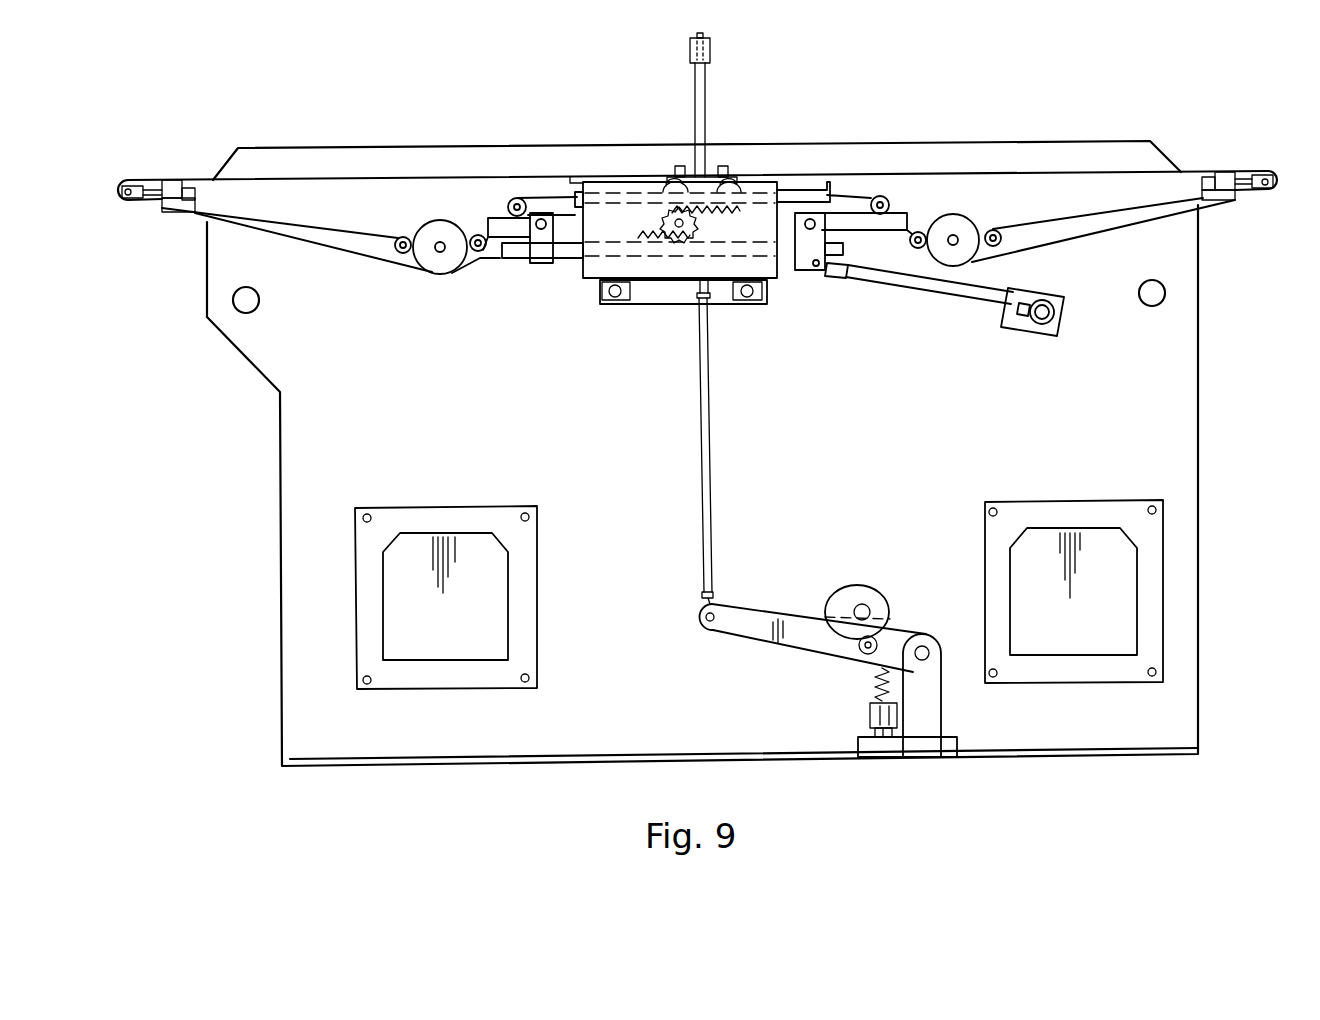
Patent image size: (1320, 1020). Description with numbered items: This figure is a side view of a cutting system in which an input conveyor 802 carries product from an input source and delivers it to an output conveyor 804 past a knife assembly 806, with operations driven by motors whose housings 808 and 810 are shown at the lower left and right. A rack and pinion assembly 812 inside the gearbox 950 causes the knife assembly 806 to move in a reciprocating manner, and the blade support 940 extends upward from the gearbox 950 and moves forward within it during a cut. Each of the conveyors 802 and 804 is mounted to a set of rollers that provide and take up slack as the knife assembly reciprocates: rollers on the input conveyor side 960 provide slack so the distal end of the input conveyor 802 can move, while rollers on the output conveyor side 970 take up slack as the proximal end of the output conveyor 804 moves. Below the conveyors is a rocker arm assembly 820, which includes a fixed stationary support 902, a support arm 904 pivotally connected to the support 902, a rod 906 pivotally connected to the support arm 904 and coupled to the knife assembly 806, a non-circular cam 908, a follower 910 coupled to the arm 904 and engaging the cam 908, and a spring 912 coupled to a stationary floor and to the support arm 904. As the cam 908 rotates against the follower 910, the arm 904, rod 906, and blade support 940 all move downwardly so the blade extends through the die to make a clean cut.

The input conveyor 802 is at (1027, 170).
The output conveyor 804 is at (433, 176).
The knife assembly 806 is at (678, 52).
The motor housing 808 is at (470, 641).
The motor housing 810 is at (1102, 641).
The rack and pinion assembly 812 is at (699, 229).
The rocker arm assembly 820 is at (780, 563).
The stationary support 902 is at (941, 710).
The support arm 904 is at (750, 628).
The rod 906 is at (701, 425).
The cam 908 is at (869, 586).
The follower 910 is at (880, 638).
The spring 912 is at (872, 683).
The blade support 940 is at (706, 90).
The gearbox 950 is at (583, 274).
The input conveyor side 960 is at (1222, 138).
The output conveyor side 970 is at (180, 143).